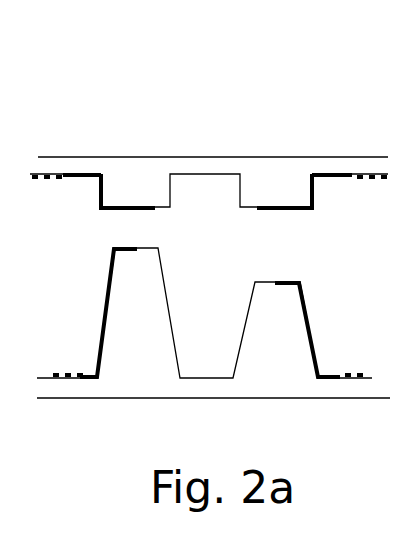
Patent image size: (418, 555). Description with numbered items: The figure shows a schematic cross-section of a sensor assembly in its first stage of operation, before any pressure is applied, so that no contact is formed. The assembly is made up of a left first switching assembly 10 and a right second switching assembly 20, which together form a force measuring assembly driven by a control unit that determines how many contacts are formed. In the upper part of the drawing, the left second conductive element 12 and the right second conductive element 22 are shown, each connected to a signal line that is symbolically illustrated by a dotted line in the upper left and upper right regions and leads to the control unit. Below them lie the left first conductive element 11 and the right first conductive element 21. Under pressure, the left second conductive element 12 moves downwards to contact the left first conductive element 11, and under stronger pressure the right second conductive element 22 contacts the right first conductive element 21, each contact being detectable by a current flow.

The first switching assembly 10 is at (115, 146).
The second switching assembly 20 is at (277, 149).
The left first conductive element 11 is at (105, 302).
The left second conductive element 12 is at (130, 213).
The right first conductive element 21 is at (303, 285).
The right second conductive element 22 is at (288, 212).